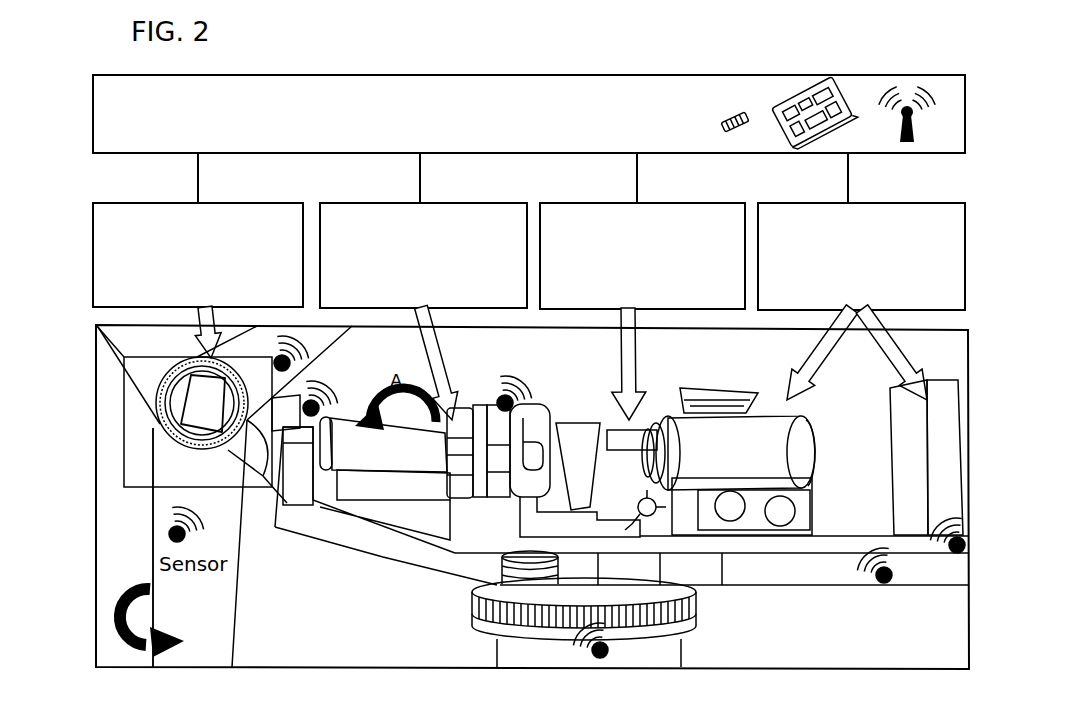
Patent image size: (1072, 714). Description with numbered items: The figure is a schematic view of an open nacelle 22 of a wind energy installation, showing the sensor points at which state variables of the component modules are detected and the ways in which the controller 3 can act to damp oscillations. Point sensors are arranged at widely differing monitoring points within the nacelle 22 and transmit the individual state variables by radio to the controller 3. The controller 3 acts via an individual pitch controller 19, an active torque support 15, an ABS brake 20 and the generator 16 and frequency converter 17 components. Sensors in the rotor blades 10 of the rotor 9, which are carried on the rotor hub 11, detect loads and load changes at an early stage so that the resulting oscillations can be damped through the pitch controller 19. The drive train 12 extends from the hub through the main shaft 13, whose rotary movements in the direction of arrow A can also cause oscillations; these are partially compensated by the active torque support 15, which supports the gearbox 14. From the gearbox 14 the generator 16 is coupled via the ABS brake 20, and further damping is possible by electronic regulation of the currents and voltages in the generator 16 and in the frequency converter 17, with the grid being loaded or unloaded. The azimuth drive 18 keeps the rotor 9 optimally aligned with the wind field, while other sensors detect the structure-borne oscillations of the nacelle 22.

The controller 3 is at (759, 86).
The rotor 9 is at (151, 521).
The rotor blade 10 is at (136, 343).
The rotor hub 11 is at (252, 480).
The drive train 12 is at (440, 512).
The main shaft 13 is at (370, 443).
The gearbox 14 is at (568, 414).
The torque support 15 is at (503, 214).
The generator 16 is at (931, 210).
The frequency converter 17 is at (950, 434).
The azimuth drive 18 is at (486, 572).
The pitch drive system 19 is at (280, 220).
The ABS soft brake 20 is at (728, 217).
The nacelle 22 is at (808, 575).